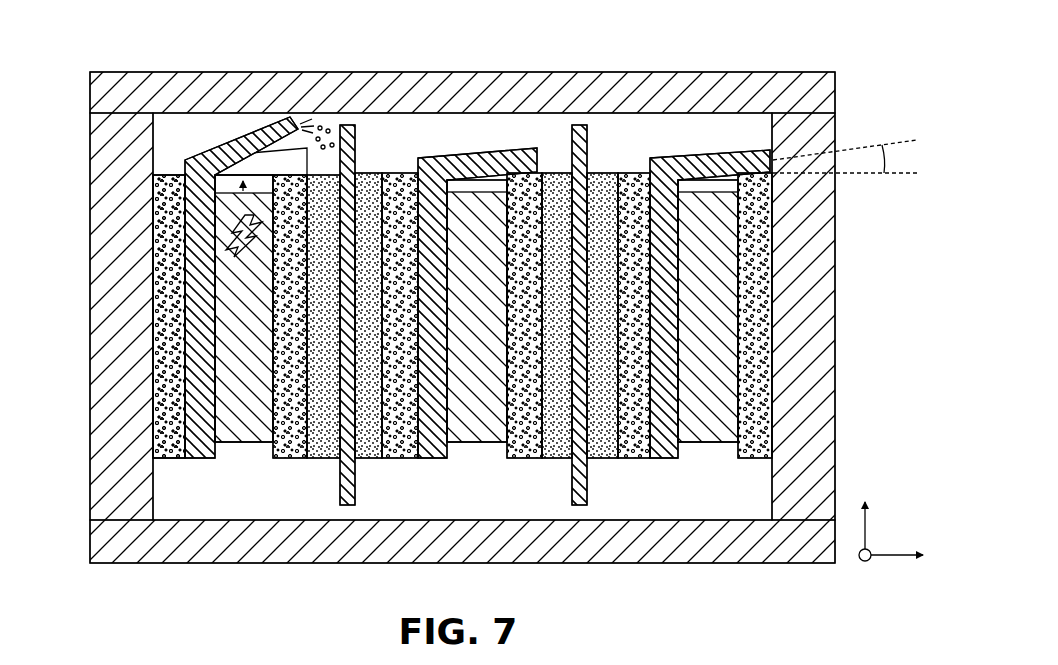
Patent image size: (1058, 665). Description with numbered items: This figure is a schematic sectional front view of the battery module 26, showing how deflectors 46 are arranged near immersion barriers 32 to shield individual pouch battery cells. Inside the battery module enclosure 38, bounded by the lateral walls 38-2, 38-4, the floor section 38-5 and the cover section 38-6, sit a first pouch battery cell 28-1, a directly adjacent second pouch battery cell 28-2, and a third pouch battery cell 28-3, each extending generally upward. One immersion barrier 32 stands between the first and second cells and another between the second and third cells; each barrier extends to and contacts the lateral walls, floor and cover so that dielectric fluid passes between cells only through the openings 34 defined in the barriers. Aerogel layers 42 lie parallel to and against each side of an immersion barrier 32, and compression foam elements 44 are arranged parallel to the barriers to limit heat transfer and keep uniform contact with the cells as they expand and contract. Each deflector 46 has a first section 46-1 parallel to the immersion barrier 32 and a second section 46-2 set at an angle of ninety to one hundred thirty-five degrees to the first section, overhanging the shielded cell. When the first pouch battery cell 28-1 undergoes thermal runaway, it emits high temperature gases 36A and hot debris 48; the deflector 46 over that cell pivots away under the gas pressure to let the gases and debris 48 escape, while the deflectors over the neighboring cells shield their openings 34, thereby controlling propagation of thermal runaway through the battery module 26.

The battery module 26 is at (886, 66).
The first pouch battery cell 28-1 is at (232, 443).
The second pouch battery cell 28-2 is at (478, 442).
The third pouch battery cell 28-3 is at (730, 442).
The immersion barrier 32 is at (335, 488).
The opening 34 is at (347, 120).
The high temperature gases 36A is at (240, 206).
The battery module enclosure 38 is at (477, 319).
The lateral wall 38-2 is at (100, 168).
The lateral wall 38-4 is at (817, 248).
The floor section 38-5 is at (218, 560).
The cover section 38-6 is at (447, 97).
The aerogel layer 42 is at (370, 170).
The compression foam element 44 is at (173, 170).
The deflector 46 is at (458, 306).
The first section 46-1 is at (185, 378).
The second section 46-2 is at (248, 131).
The debris 48 is at (327, 116).